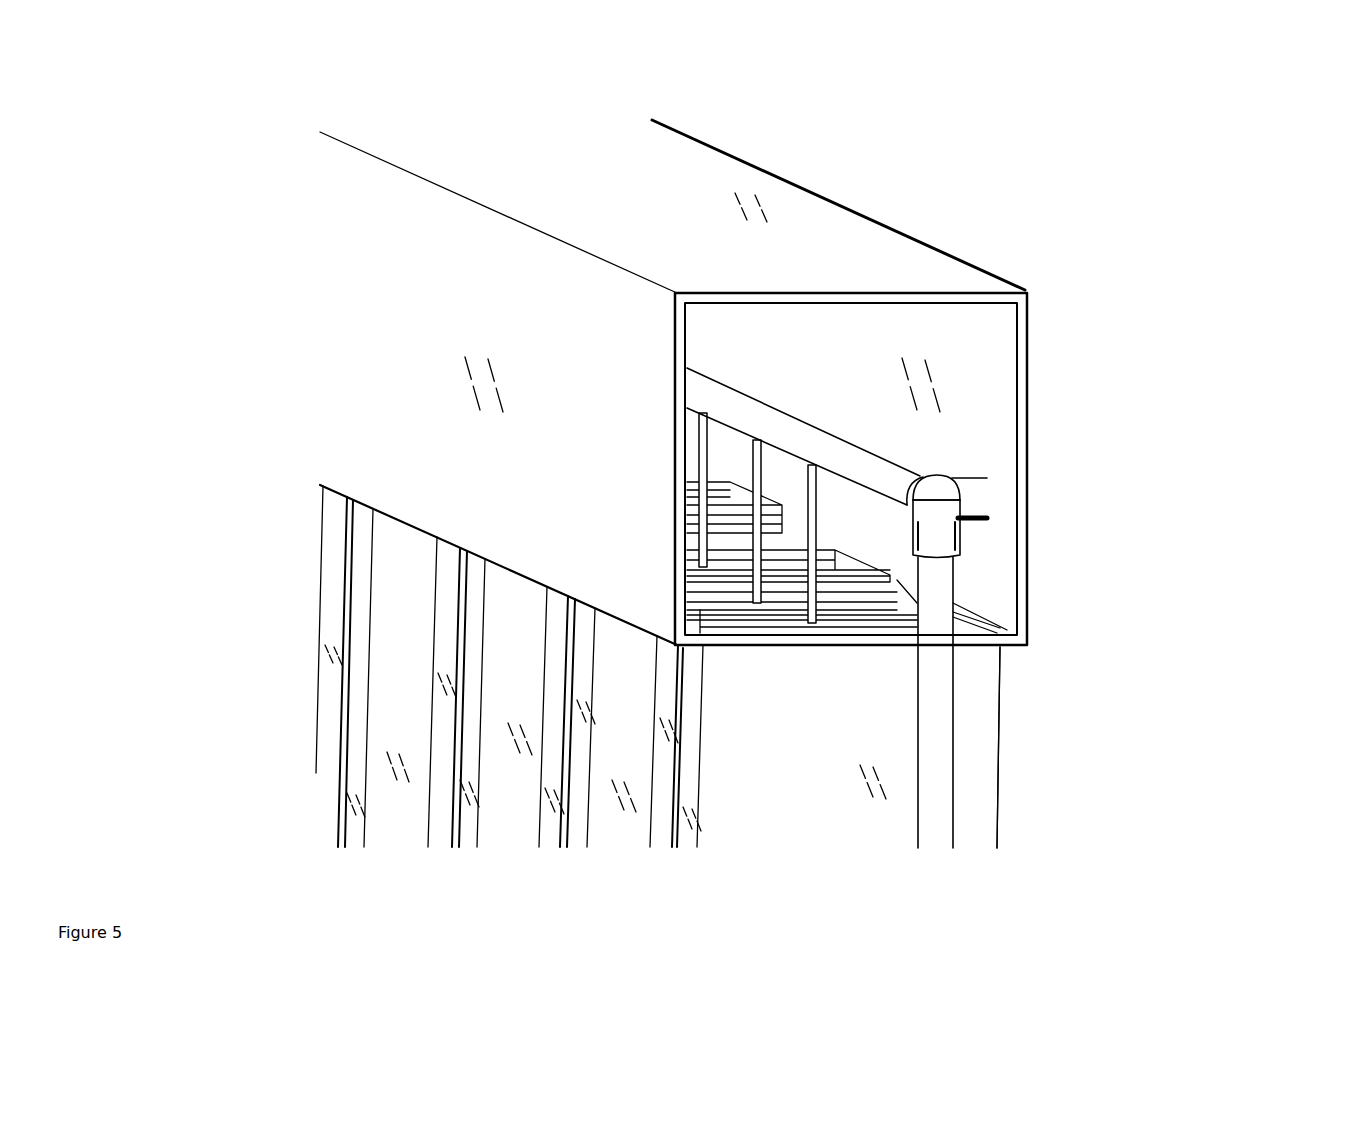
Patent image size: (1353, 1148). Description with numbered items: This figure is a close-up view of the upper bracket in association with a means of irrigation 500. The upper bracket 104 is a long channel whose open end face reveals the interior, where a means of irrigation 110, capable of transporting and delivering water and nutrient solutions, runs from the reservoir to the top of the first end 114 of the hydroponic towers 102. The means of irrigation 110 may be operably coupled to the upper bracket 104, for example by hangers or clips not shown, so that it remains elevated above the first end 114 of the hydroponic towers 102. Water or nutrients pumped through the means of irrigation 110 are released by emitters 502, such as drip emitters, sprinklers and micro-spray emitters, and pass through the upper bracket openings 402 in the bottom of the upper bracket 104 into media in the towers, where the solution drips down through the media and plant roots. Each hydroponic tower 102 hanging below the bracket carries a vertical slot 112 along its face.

The upper bracket in association with a means of irrigation 500 is at (1102, 165).
The upper bracket 104 is at (777, 178).
The upper bracket openings 402 is at (633, 546).
The emitters 502 is at (813, 498).
The means of irrigation 110 is at (935, 720).
The first end 114 is at (996, 672).
The hydroponic tower 102 is at (1205, 873).
The slot 112 is at (452, 845).